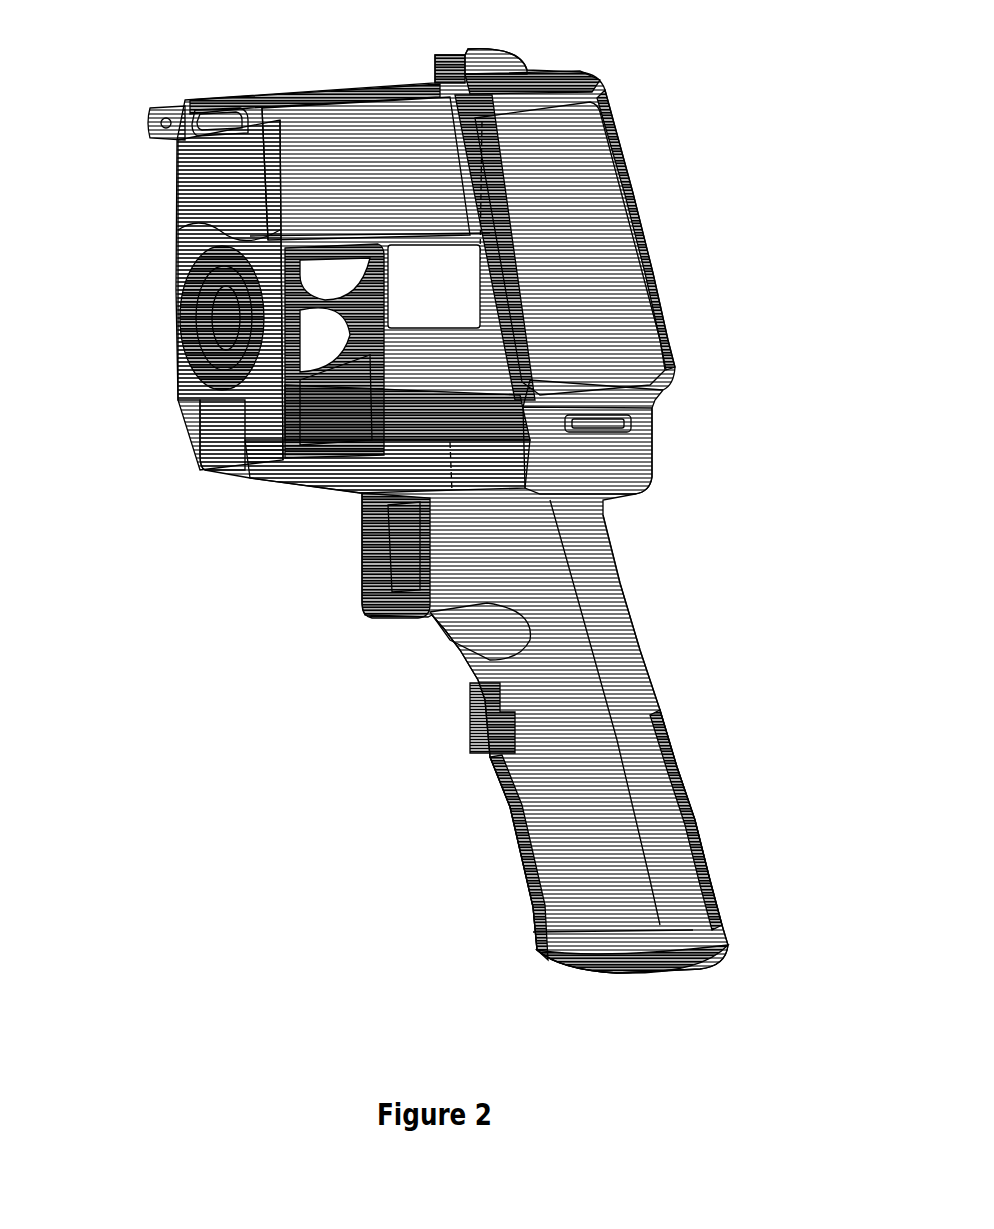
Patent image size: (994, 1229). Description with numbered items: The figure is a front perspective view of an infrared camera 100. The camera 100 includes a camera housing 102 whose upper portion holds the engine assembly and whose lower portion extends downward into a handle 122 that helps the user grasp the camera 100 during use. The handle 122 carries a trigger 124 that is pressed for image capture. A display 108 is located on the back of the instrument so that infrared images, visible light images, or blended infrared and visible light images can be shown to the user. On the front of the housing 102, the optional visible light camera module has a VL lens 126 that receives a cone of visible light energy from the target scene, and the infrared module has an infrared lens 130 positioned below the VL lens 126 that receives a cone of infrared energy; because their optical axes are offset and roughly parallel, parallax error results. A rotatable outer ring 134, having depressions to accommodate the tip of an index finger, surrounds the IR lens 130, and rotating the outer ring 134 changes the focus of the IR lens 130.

The infrared camera 100 is at (667, 443).
The camera housing 102 is at (415, 178).
The display 108 is at (634, 203).
The handle 122 is at (535, 806).
The trigger 124 is at (358, 592).
The VL lens 126 is at (212, 140).
The infrared (IR) lens 130 is at (242, 357).
The rotatable outer ring 134 is at (318, 360).